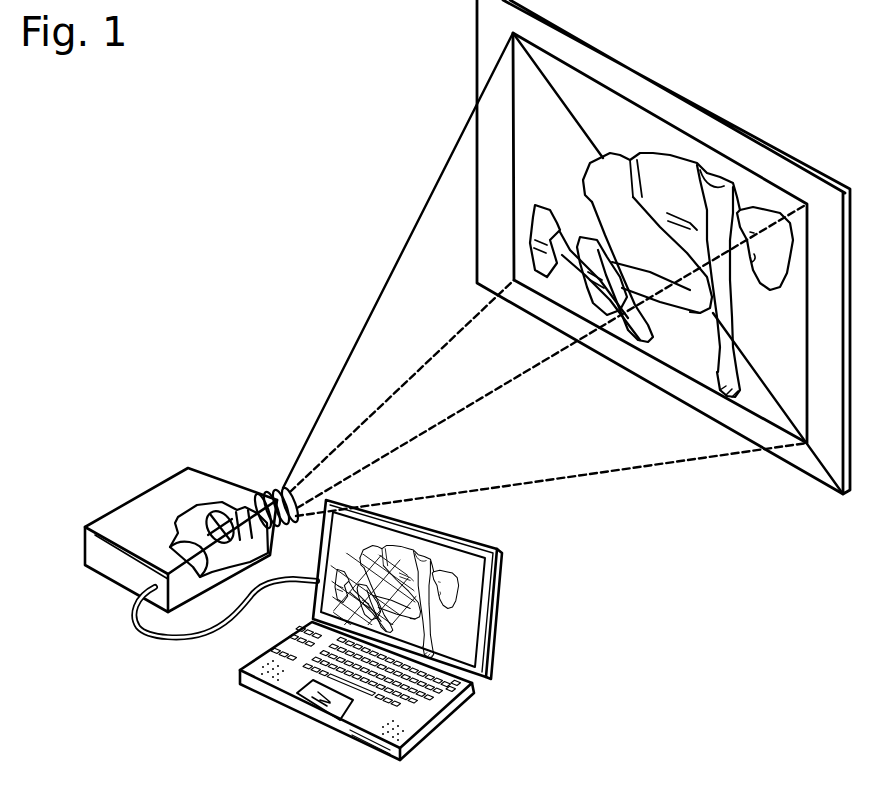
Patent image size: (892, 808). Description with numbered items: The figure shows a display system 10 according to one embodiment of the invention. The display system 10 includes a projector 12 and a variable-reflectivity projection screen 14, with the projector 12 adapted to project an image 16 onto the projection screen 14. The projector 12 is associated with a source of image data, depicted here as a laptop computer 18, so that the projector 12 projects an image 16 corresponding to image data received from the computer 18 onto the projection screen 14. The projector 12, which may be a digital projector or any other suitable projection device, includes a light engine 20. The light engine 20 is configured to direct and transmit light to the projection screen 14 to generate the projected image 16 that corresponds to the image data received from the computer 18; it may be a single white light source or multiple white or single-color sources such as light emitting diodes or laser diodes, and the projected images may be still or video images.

The display system 10 is at (166, 148).
The projector 12 is at (117, 567).
The variable-reflectivity projection screen 14 is at (570, 52).
The image 16 is at (703, 153).
The laptop computer 18 is at (503, 572).
The light engine 20 is at (181, 495).